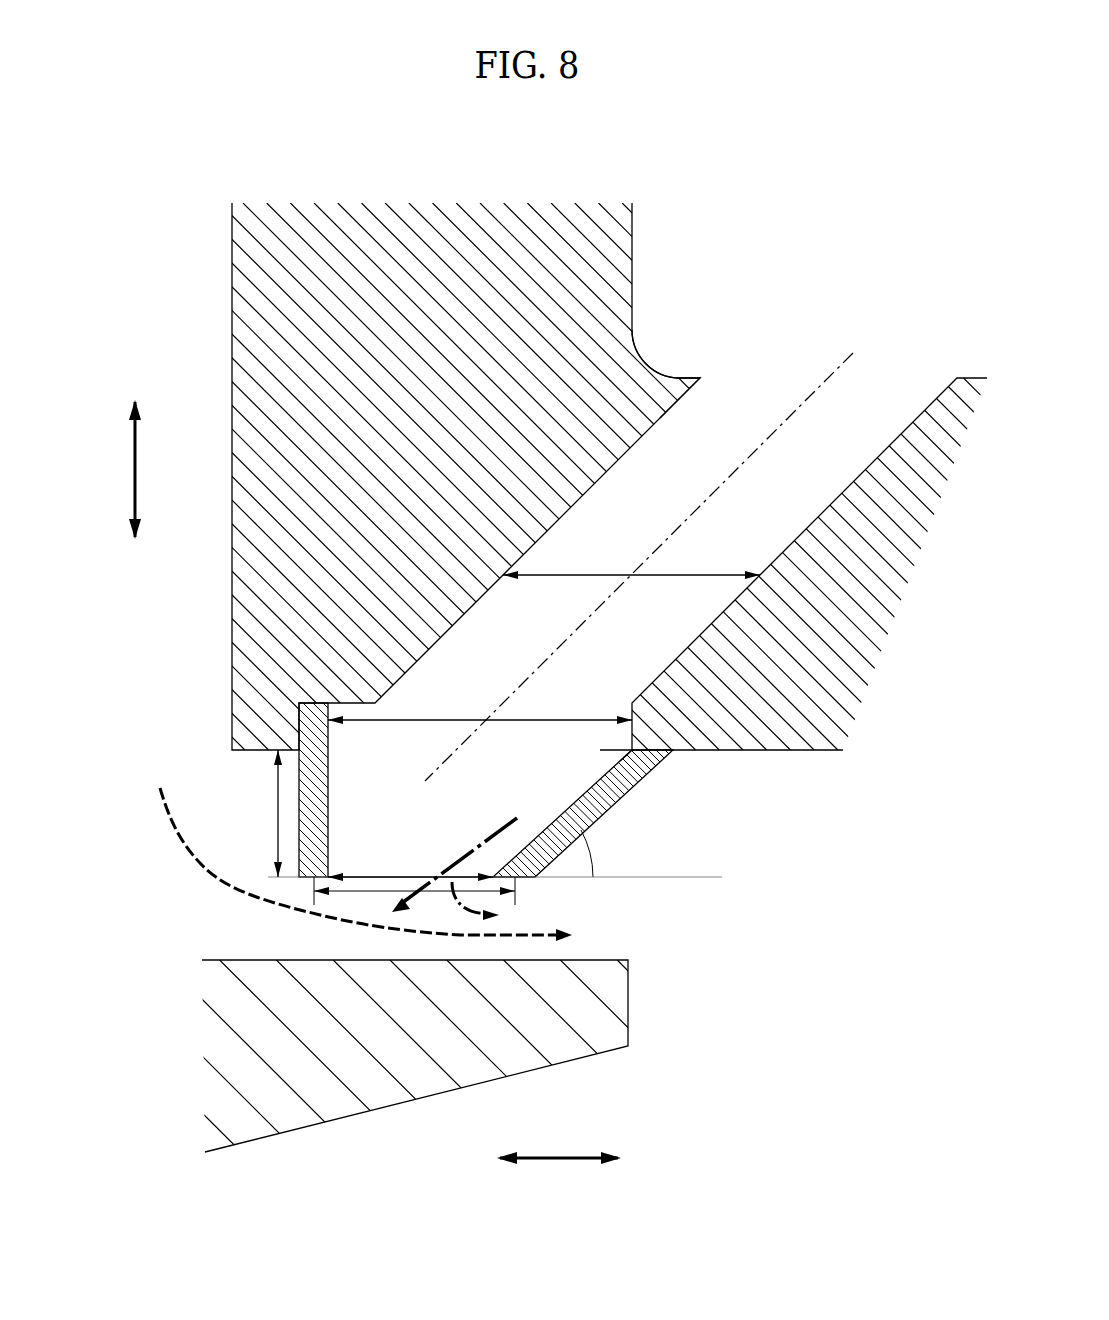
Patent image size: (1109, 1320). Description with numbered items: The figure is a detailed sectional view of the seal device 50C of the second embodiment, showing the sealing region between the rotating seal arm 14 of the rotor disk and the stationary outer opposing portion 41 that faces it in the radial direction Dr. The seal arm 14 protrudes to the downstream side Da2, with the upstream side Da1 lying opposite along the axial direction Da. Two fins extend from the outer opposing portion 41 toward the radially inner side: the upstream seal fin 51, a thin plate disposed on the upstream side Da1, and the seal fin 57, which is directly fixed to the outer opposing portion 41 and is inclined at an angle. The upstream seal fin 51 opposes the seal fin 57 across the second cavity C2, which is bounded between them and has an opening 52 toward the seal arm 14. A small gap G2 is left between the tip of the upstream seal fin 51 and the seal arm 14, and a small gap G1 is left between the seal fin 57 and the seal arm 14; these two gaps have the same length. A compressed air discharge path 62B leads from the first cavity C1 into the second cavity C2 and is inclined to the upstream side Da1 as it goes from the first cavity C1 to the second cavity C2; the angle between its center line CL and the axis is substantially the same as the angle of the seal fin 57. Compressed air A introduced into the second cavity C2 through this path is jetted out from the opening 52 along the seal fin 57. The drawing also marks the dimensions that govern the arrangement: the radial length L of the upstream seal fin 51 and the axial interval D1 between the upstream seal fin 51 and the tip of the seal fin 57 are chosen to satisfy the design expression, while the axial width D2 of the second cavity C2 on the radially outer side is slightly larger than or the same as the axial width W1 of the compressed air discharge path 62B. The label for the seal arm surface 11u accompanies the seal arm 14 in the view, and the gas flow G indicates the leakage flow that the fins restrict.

The first cavity C1 is at (758, 240).
The compressed air discharge path 62B is at (673, 379).
The center line CL is at (818, 382).
The outer opposing portion 41 is at (807, 730).
The upstream seal fin 51 is at (312, 721).
The seal fin 57 is at (607, 815).
The second cavity C2 is at (590, 731).
The seal arm 14 is at (429, 1056).
The upstream surface 11u is at (242, 1007).
The width of the compressed air discharge path W1 is at (631, 559).
The width of the second cavity D2 is at (480, 705).
The length of the upstream seal fin L is at (268, 813).
The opening 52 is at (410, 863).
The interval between the upstream seal fin and the tip of the seal fin D1 is at (414, 902).
The compressed air A is at (490, 840).
The small gap G1 is at (512, 905).
The gas flow G is at (172, 828).
The seal device 50C is at (165, 872).
The small gap G2 is at (308, 922).
The radial direction Dr is at (121, 469).
The axial direction Da is at (559, 1177).
The upstream side Da1 is at (467, 1162).
The downstream side Da2 is at (649, 1162).